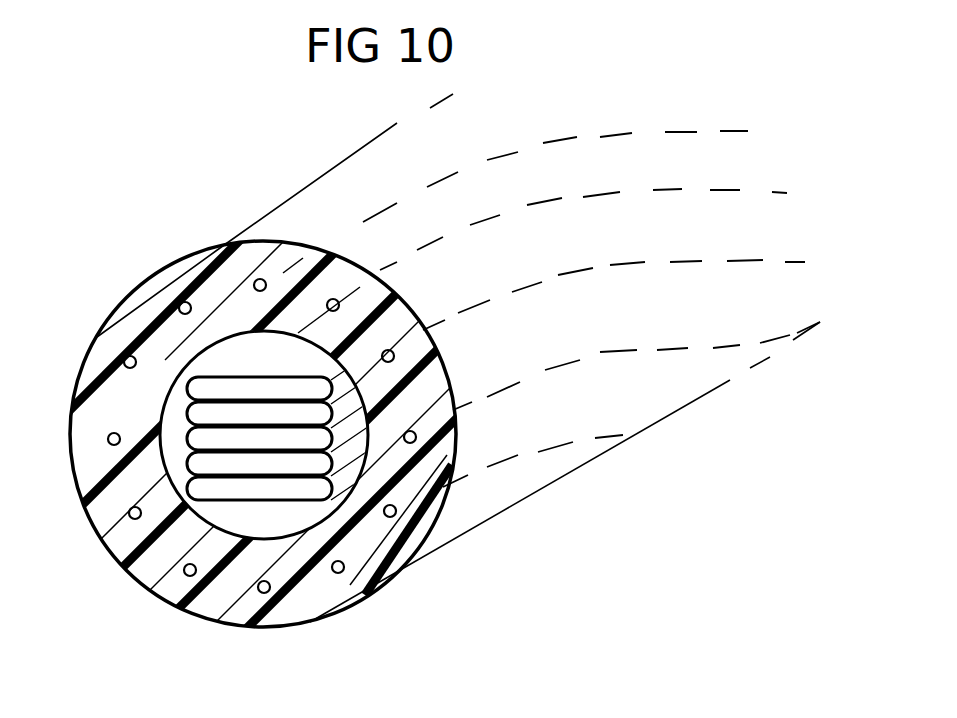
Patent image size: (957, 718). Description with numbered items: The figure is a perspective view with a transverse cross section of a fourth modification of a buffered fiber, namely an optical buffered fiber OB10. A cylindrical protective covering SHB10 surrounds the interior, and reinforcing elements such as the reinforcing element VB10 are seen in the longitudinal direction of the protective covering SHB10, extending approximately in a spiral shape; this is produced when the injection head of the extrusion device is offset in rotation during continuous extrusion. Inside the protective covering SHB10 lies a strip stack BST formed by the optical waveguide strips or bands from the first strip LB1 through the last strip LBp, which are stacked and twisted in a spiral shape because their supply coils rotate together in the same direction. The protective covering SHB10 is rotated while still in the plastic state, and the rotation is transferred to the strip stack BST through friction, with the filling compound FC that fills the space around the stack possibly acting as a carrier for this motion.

The optical buffered fiber OB10 is at (130, 293).
The filling compound FC is at (250, 358).
The optical waveguide strip LB1 is at (293, 383).
The protective covering SHB10 is at (378, 323).
The reinforcing element VB10 is at (398, 370).
The optical waveguide strip LBp is at (297, 504).
The strip stack BST is at (388, 548).